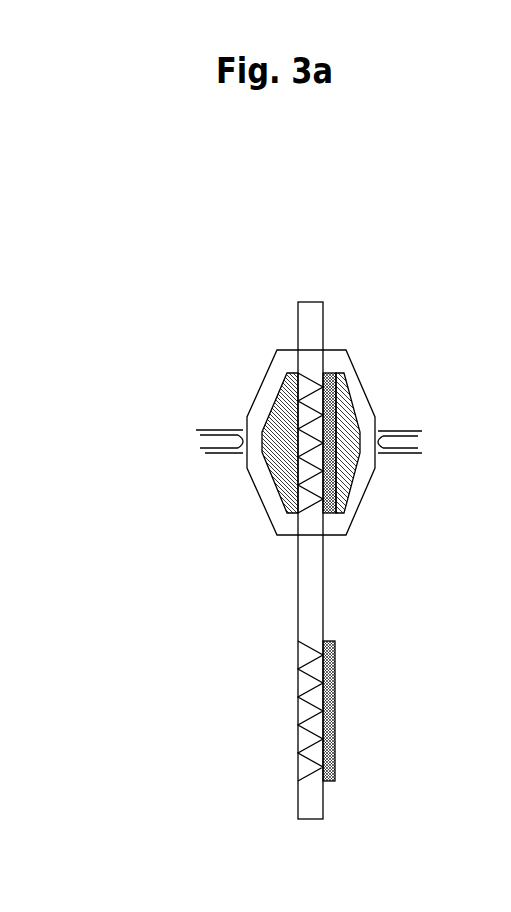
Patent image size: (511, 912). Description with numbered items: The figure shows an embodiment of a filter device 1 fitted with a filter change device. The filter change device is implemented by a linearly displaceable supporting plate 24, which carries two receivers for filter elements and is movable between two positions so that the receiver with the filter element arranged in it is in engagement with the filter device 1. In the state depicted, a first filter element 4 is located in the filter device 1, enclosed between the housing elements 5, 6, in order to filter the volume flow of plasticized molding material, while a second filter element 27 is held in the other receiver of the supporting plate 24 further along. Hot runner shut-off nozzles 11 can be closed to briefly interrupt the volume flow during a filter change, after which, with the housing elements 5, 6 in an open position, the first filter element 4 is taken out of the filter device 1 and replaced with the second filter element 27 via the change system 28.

The filter device 1 is at (172, 266).
The first filter element 4 is at (330, 395).
The housing element 5 is at (352, 487).
The housing element 6 is at (265, 395).
The hot runner shut-off nozzles 11 is at (210, 438).
The supporting plate 24 is at (315, 584).
The second filter element 27 is at (328, 697).
The change system 28 is at (241, 560).